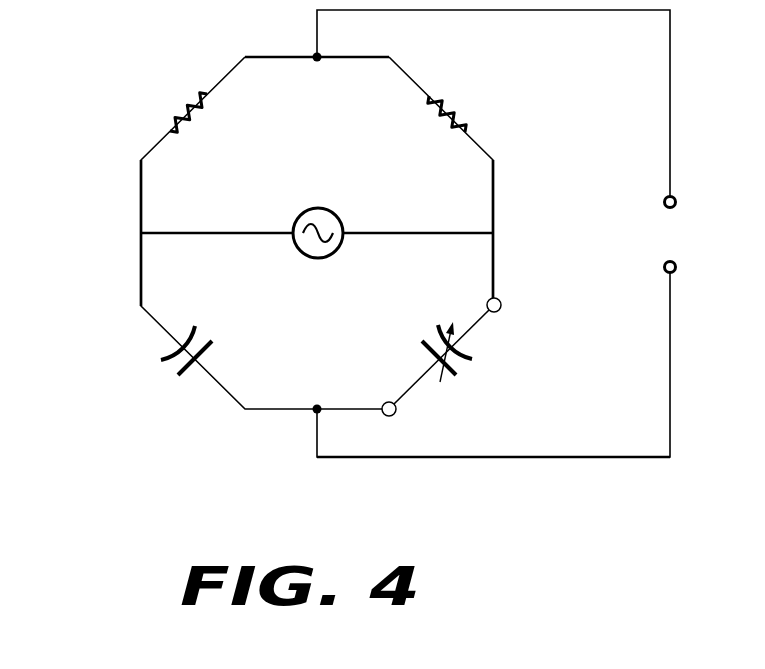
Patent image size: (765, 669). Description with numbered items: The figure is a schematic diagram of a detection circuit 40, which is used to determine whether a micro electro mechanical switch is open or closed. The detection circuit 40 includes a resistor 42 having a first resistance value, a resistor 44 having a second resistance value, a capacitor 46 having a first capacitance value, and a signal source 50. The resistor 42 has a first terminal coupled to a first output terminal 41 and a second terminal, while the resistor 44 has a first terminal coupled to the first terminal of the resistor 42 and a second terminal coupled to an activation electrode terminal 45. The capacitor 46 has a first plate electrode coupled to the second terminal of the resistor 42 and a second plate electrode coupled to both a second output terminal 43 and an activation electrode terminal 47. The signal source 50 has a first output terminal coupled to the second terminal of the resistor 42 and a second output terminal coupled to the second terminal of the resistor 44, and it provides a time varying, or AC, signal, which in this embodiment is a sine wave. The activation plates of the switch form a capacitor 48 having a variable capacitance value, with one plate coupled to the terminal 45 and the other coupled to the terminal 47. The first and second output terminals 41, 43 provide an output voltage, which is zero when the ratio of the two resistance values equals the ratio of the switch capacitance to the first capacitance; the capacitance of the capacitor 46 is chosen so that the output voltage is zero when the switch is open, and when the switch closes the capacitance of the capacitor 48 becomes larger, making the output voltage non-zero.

The detection circuit 40 is at (116, 431).
The first output terminal 41 is at (313, 53).
The resistor 42 is at (192, 124).
The second output terminal 43 is at (314, 412).
The resistor 44 is at (444, 120).
The activation electrode terminal 45 is at (501, 311).
The capacitor 46 is at (213, 343).
The activation electrode terminal 47 is at (390, 416).
The capacitor 48 is at (425, 347).
The signal source 50 is at (304, 211).